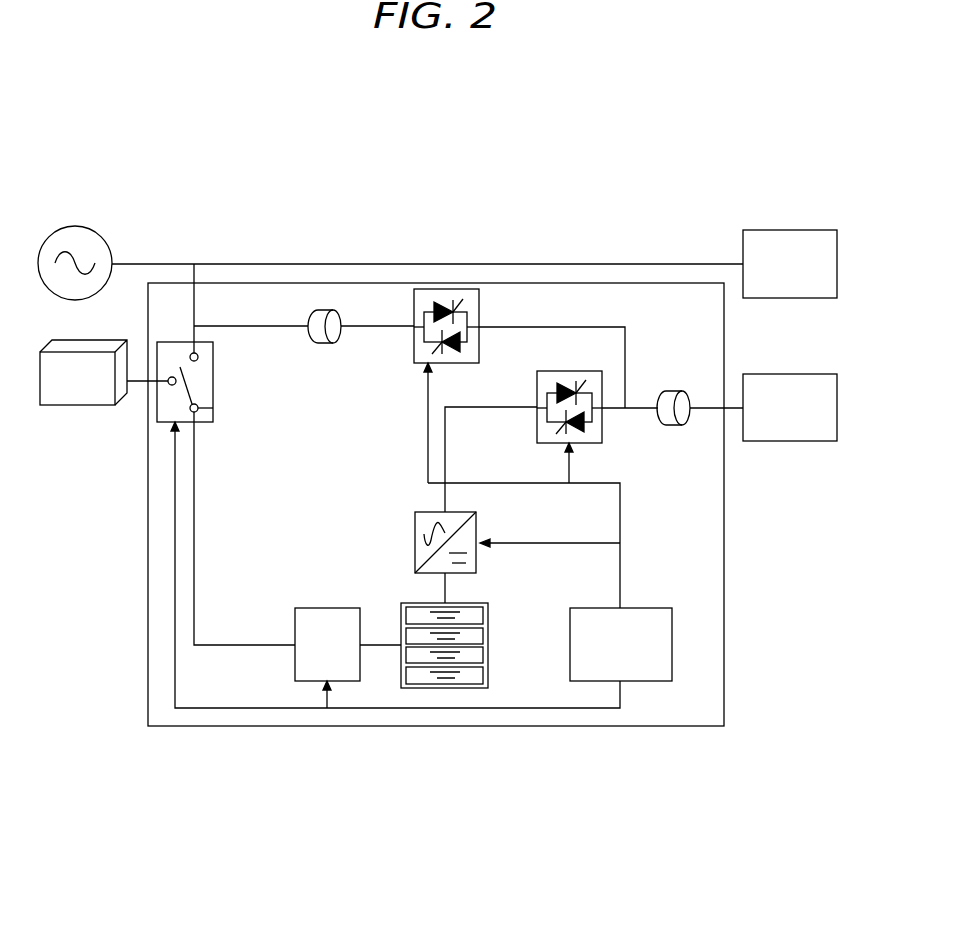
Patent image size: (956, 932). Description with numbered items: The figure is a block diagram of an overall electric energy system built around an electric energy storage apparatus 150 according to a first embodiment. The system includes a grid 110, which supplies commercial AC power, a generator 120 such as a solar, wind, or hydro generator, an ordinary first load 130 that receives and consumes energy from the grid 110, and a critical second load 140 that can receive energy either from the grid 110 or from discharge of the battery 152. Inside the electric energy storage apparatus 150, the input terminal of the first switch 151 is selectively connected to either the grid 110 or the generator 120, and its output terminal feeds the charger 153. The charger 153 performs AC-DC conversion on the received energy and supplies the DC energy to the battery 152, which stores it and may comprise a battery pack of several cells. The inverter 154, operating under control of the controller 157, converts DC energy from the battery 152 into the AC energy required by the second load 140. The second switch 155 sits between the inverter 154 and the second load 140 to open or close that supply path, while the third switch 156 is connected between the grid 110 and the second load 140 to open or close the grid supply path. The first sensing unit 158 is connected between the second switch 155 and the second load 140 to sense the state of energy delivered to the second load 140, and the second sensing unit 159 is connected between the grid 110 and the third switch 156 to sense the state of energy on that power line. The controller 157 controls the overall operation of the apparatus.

The grid 110 is at (75, 226).
The generator 120 is at (77, 407).
The first load 130 is at (788, 230).
The second load 140 is at (790, 441).
The electric energy storage apparatus 150 is at (610, 726).
The first switch 151 is at (213, 379).
The battery 152 is at (488, 642).
The charger 153 is at (316, 608).
The inverter 154 is at (415, 536).
The second switch 155 is at (537, 388).
The third switch 156 is at (479, 308).
The controller 157 is at (648, 608).
The first sensing unit 158 is at (672, 427).
The second sensing unit 159 is at (322, 345).